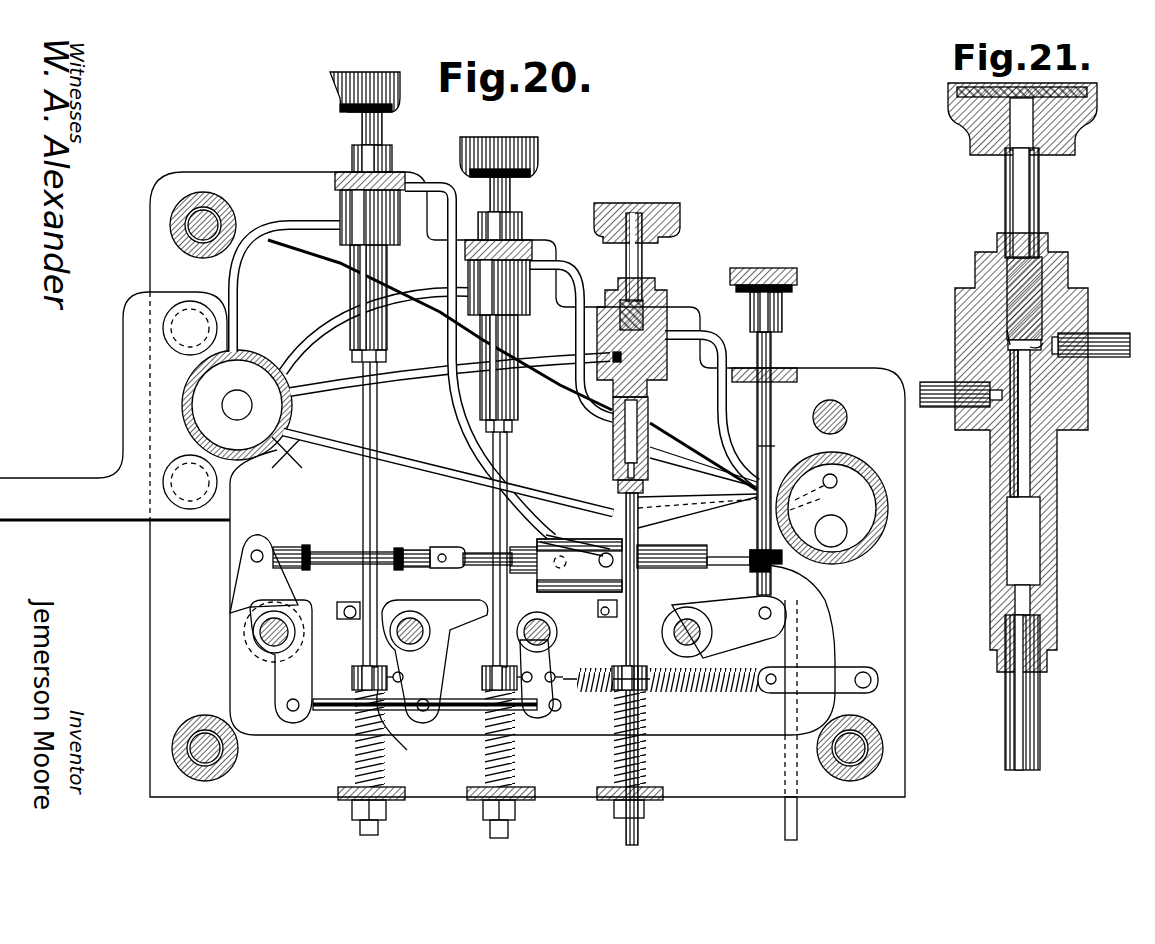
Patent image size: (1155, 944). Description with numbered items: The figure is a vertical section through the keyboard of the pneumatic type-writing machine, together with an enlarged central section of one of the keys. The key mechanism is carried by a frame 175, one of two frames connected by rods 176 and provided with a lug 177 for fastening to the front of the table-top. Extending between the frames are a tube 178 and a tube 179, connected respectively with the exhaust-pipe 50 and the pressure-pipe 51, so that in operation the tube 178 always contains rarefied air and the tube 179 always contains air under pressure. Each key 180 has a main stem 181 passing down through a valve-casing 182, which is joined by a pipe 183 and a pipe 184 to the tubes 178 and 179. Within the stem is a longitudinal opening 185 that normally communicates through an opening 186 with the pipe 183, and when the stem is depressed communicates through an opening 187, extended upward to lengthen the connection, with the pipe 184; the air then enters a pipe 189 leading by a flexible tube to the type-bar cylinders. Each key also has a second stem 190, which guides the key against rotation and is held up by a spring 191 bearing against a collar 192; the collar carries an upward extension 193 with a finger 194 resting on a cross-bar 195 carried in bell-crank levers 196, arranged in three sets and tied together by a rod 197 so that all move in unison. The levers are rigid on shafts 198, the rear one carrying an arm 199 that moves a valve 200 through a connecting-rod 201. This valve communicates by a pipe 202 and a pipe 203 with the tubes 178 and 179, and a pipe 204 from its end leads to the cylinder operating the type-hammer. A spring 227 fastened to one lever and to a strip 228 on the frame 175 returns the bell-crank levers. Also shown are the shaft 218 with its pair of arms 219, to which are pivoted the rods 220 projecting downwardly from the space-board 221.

In FIG. 20, the exhaust-pipe 50 is at (838, 524).
In FIG. 20, the pressure-pipe 51 is at (226, 406).
In FIG. 20, the frame 175 is at (527, 484).
In FIG. 20, the rod 176 is at (203, 212).
In FIG. 20, the lug 177 is at (67, 482).
In FIG. 20, the tube 178 is at (855, 470).
In FIG. 20, the tube 179 is at (288, 457).
In FIG. 20, the key 180 is at (363, 82).
In FIG. 21, the key 180 is at (950, 114).
In FIG. 20, the main stem 181 is at (643, 262).
In FIG. 21, the main stem 181 is at (1018, 201).
In FIG. 20, the valve-casing 182 is at (345, 199).
In FIG. 21, the valve-casing 182 is at (1079, 418).
In FIG. 20, the pipe 183 is at (441, 212).
In FIG. 21, the pipe 183 is at (1104, 332).
In FIG. 20, the pipe 184 is at (248, 273).
In FIG. 21, the pipe 184 is at (936, 382).
In FIG. 20, the longitudinal opening 185 is at (645, 402).
In FIG. 21, the longitudinal opening 185 is at (1025, 471).
In FIG. 21, the opening 186 is at (1038, 347).
In FIG. 21, the opening 187 is at (1010, 337).
In FIG. 20, the pipe 189 is at (360, 832).
In FIG. 21, the pipe 189 is at (1035, 701).
In FIG. 20, the second stem 190 is at (505, 452).
In FIG. 20, the spring 191 is at (356, 757).
In FIG. 20, the collar 192 is at (486, 692).
In FIG. 20, the upward extension 193 is at (373, 649).
In FIG. 20, the finger 194 is at (476, 550).
In FIG. 20, the cross-bar 195 is at (379, 606).
In FIG. 20, the bell-crank lever 196 is at (267, 671).
In FIG. 20, the rod 197 is at (404, 735).
In FIG. 20, the shaft 198 is at (265, 634).
In FIG. 20, the arm 199 is at (292, 606).
In FIG. 20, the valve 200 is at (582, 537).
In FIG. 20, the connecting-rod 201 is at (400, 548).
In FIG. 20, the pipe 202 is at (670, 527).
In FIG. 20, the pipe 203 is at (447, 478).
In FIG. 20, the pipe 204 is at (800, 830).
In FIG. 20, the shaft 218 is at (685, 620).
In FIG. 20, the arm 219 is at (729, 627).
In FIG. 20, the rod 220 is at (776, 446).
In FIG. 20, the space-board 221 is at (768, 268).
In FIG. 20, the spring 227 is at (706, 692).
In FIG. 20, the strip 228 is at (852, 667).